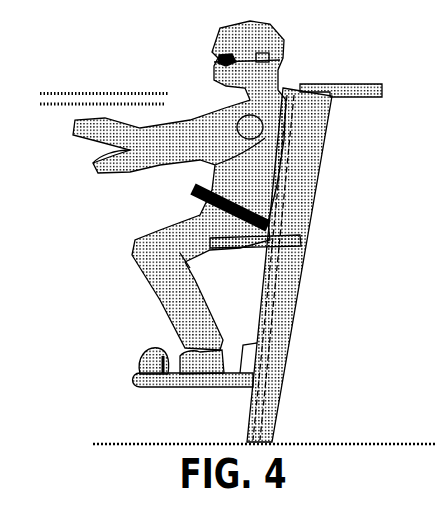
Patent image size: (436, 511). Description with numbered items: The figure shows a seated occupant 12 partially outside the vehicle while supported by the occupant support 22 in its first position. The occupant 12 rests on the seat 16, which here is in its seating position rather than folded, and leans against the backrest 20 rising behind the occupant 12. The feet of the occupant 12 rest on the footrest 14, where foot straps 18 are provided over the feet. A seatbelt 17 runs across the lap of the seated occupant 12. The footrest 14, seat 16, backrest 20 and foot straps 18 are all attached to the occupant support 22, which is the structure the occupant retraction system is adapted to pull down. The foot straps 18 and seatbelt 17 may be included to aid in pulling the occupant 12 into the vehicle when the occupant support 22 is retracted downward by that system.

The occupant 12 is at (270, 92).
The footrest 14 is at (178, 377).
The seat 16 is at (280, 238).
The seatbelt 17 is at (200, 215).
The foot straps 18 is at (180, 368).
The backrest 20 is at (307, 110).
The occupant support 22 is at (290, 188).